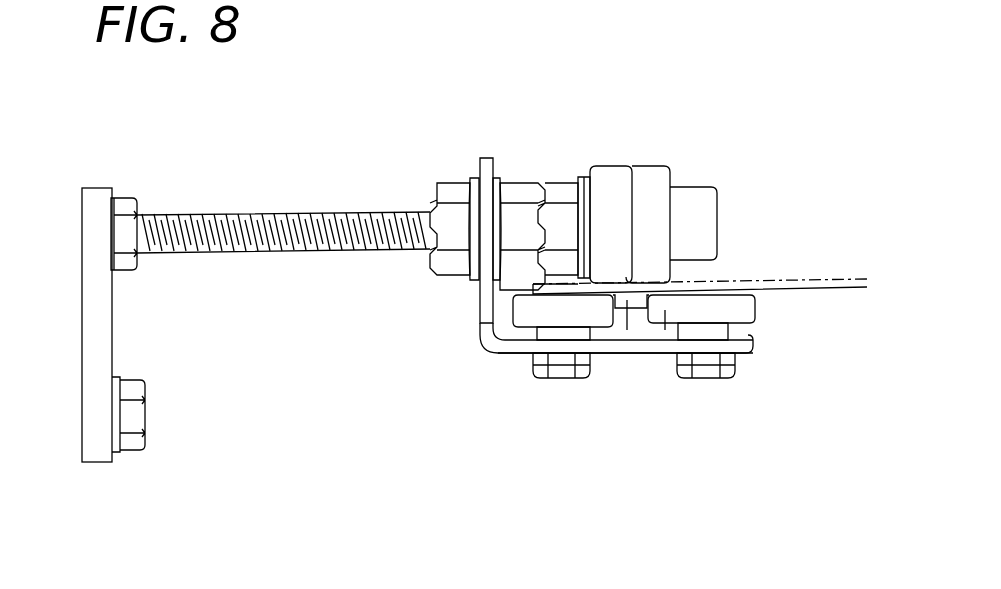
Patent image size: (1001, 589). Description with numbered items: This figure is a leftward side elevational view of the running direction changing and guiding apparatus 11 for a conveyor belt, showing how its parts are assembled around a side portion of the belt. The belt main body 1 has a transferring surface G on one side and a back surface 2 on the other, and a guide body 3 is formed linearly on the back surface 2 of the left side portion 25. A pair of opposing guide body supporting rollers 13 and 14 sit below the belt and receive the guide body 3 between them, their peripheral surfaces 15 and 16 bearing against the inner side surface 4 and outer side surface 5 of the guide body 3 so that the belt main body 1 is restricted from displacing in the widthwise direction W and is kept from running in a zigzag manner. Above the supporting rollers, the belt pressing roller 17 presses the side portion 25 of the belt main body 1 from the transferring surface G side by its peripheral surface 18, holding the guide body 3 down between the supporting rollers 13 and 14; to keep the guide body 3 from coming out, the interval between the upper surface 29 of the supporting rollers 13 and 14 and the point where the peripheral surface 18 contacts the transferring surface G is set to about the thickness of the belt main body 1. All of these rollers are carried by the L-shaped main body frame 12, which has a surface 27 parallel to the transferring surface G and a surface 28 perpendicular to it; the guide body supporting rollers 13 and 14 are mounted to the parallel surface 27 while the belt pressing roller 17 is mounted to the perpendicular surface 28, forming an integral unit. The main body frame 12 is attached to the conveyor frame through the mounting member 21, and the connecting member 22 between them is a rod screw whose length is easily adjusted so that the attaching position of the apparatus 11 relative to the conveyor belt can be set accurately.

The belt main body 1 is at (812, 280).
The back surface 2 is at (788, 280).
The guide body 3 is at (627, 300).
The inner side surface 4 is at (665, 310).
The outer side surface 5 is at (597, 310).
The running direction changing and guiding apparatus 11 is at (383, 160).
The main body frame 12 is at (614, 267).
The guide body supporting roller 13 is at (740, 303).
The guide body supporting roller 14 is at (517, 305).
The peripheral surface 15 is at (758, 312).
The peripheral surface 16 is at (495, 312).
The belt pressing roller 17 is at (658, 187).
The peripheral surface 18 is at (643, 165).
The mounting member 21 is at (99, 199).
The connecting member 22 is at (287, 215).
The left side portion 25 is at (550, 290).
The surface parallel to the transferring surface 27 is at (757, 335).
The surface perpendicular to the transferring surface 28 is at (493, 160).
The upper surface 29 is at (730, 282).
The transferring surface G is at (845, 277).
The widthwise direction W is at (865, 163).